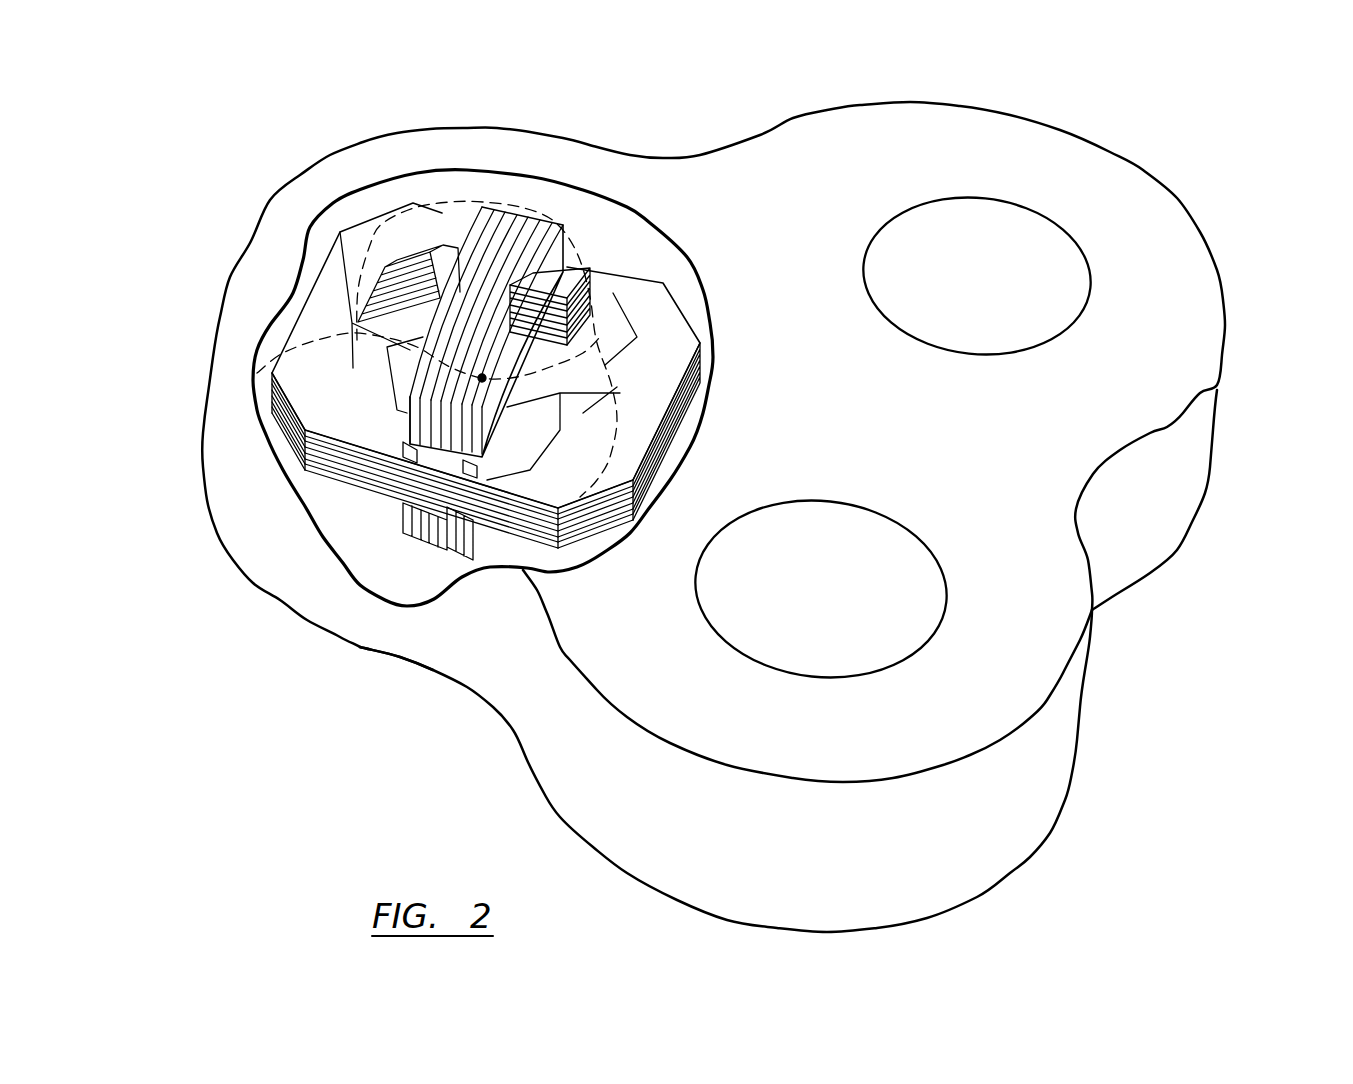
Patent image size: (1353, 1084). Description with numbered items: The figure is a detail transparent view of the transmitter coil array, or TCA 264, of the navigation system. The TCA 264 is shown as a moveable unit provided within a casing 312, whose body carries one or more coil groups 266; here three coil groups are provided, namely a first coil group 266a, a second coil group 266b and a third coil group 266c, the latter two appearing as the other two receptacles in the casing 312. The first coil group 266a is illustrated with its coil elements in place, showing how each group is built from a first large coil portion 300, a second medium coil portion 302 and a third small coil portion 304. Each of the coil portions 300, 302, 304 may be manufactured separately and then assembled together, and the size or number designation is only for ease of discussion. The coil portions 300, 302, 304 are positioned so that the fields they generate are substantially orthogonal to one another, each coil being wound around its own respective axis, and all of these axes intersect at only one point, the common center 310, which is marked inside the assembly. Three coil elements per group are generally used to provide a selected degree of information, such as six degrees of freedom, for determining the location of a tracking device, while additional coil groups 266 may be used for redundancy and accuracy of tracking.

The transmitter coil array 264 is at (249, 177).
The coil groups 266 is at (265, 289).
The first coil group 266a is at (255, 375).
The second coil group 266b is at (1093, 278).
The third coil group 266c is at (946, 615).
The first large coil portion 300 is at (545, 553).
The second medium coil portion 302 is at (473, 240).
The third small coil portion 304 is at (590, 317).
The common center 310 is at (486, 381).
The casing 312 is at (343, 638).